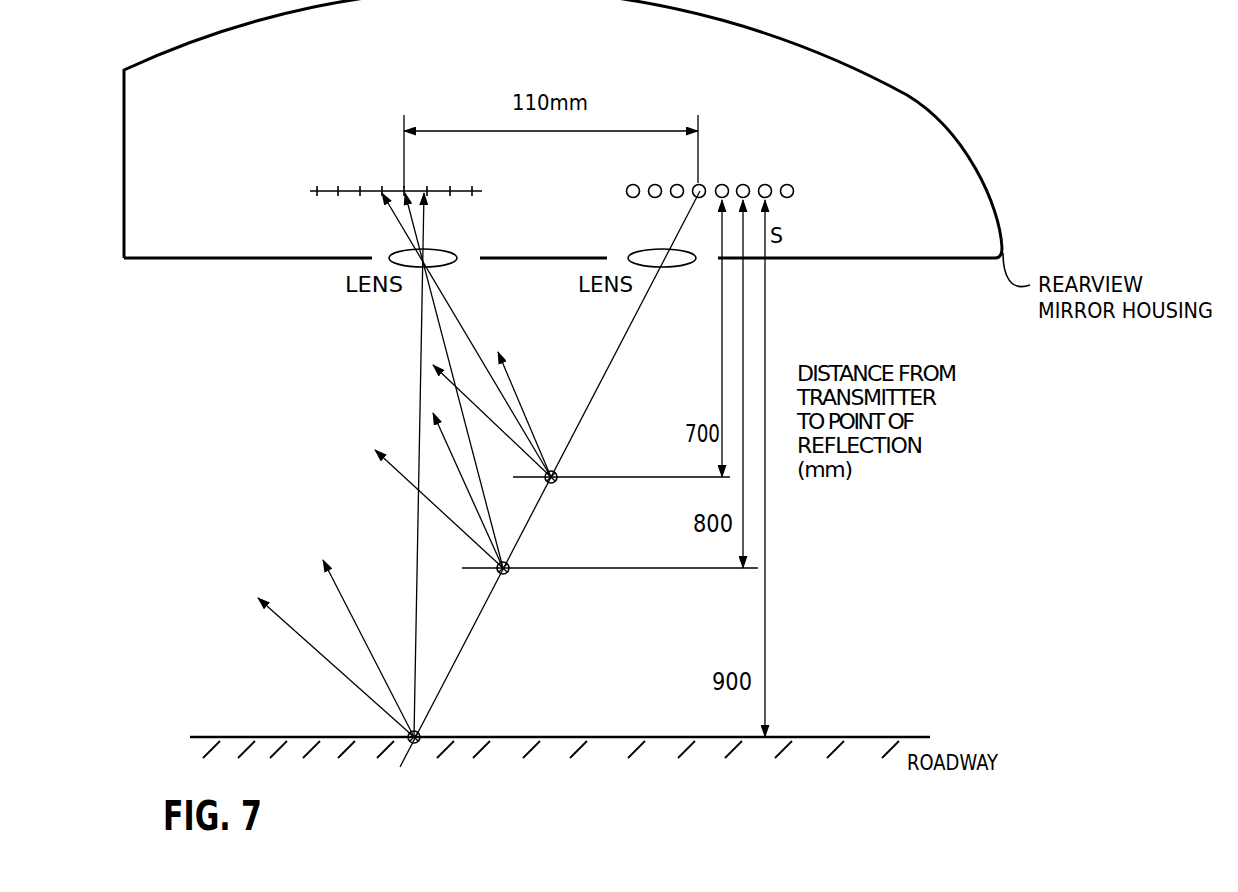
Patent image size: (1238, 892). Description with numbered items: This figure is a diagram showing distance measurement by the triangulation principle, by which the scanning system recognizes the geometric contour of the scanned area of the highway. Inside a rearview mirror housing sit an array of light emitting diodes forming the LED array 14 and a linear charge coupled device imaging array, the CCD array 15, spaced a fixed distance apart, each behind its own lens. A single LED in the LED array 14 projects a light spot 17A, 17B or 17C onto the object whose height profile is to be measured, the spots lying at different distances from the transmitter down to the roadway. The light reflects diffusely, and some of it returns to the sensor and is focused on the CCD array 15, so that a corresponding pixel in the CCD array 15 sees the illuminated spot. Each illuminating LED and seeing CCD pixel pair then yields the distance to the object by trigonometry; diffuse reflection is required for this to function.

The LED array 14 is at (760, 162).
The CCD imaging array 15 is at (366, 160).
The light spot 17A is at (554, 484).
The light spot 17B is at (506, 575).
The light spot 17C is at (421, 732).